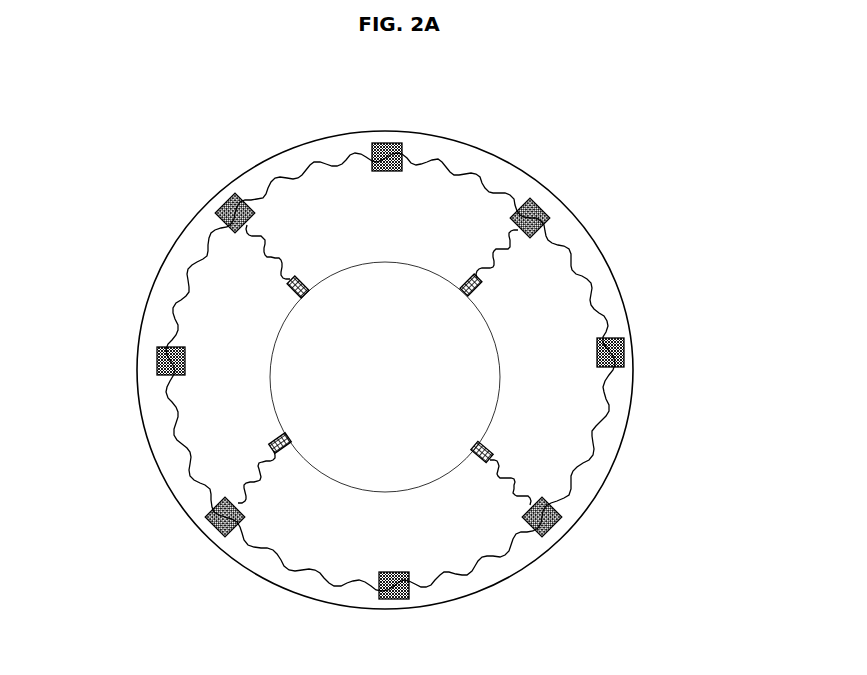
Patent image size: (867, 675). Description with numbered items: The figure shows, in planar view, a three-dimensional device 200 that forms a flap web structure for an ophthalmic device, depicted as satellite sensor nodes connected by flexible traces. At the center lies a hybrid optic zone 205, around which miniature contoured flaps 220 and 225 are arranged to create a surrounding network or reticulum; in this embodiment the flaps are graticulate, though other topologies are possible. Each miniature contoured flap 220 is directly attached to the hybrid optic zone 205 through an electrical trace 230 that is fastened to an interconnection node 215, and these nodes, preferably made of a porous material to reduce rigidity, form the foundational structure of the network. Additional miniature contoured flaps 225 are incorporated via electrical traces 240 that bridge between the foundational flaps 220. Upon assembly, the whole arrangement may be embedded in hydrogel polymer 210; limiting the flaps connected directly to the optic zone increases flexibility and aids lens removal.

The three-dimensional device 200 is at (106, 81).
The hybrid optic zone 205 is at (387, 377).
The hydrogel polymer 210 is at (383, 237).
The interconnection node 215 is at (481, 450).
The miniature contoured flap 220 is at (532, 210).
The miniature contoured flap 225 is at (375, 142).
The electrical trace 230 is at (500, 256).
The electrical trace 240 is at (455, 167).